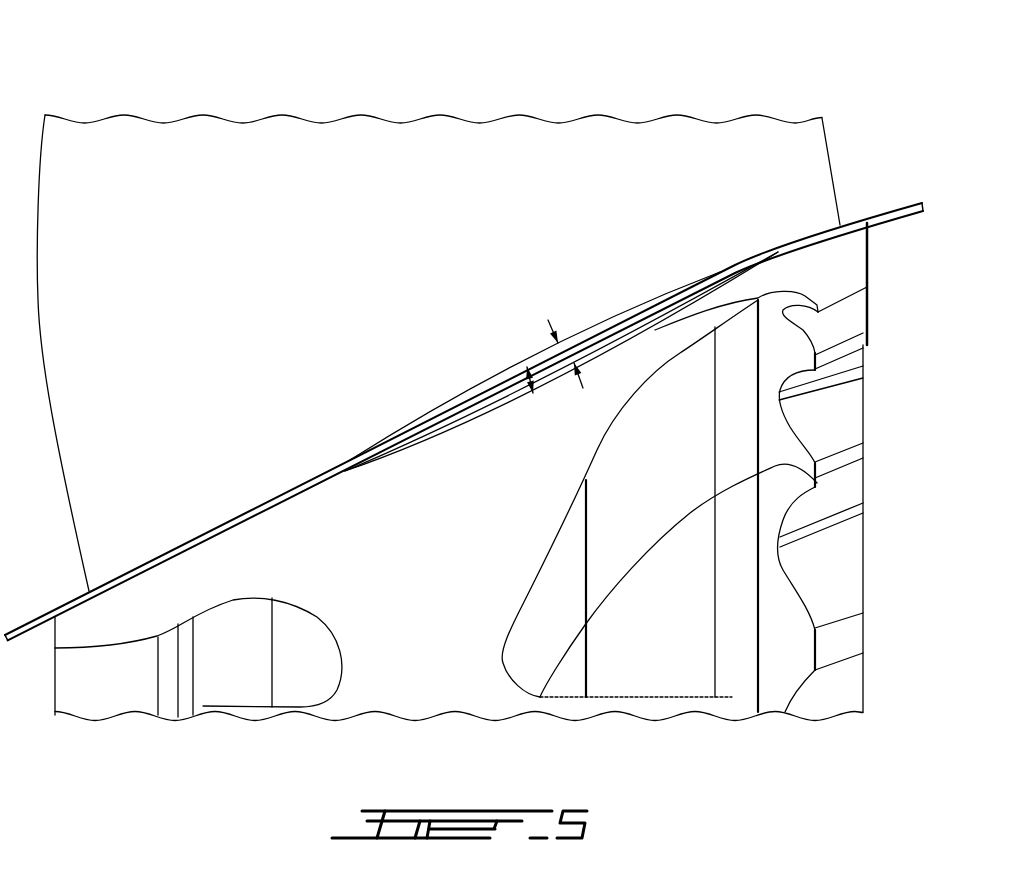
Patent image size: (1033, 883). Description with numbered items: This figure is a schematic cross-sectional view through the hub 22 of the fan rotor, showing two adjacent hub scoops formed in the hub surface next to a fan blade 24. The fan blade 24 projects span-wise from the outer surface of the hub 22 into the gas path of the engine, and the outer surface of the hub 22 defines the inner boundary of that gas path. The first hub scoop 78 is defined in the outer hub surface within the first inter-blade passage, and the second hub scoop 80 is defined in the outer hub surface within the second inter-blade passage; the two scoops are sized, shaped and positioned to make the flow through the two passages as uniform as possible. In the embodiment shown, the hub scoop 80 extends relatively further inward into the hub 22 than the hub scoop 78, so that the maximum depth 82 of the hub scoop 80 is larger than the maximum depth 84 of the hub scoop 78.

The central hub 22 is at (448, 586).
The fan blade 24 is at (628, 182).
The hub scoop 78 is at (533, 343).
The hub scoop 80 is at (473, 410).
The maximum depth 82 is at (537, 373).
The maximum depth 84 is at (567, 352).